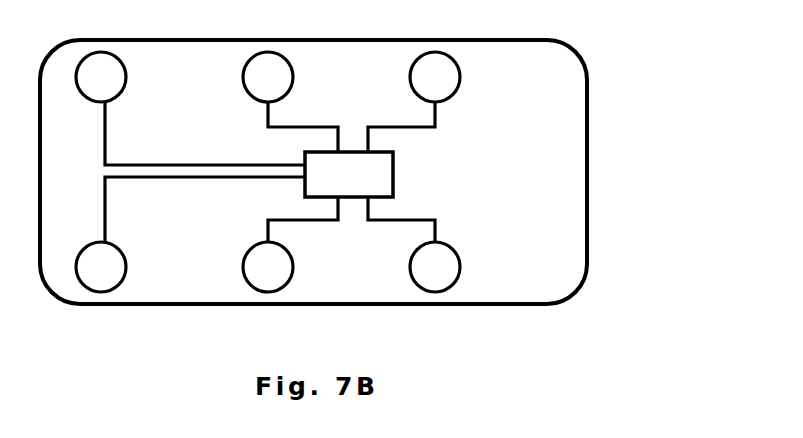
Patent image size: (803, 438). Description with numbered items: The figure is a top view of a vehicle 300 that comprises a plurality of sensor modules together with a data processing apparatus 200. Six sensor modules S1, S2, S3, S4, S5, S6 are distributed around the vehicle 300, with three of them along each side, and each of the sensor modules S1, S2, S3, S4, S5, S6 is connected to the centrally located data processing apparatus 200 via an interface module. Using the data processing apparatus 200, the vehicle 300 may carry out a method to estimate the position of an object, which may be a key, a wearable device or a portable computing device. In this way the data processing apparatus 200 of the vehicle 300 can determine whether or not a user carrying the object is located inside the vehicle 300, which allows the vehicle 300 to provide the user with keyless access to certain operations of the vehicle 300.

The data processing apparatus 200 is at (270, 172).
The vehicle 300 is at (590, 172).
The sensor module S1 is at (101, 267).
The sensor module S2 is at (268, 267).
The sensor module S3 is at (435, 267).
The sensor module S4 is at (101, 77).
The sensor module S5 is at (268, 77).
The sensor module S6 is at (435, 77).